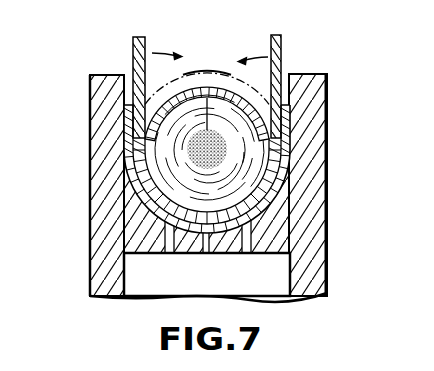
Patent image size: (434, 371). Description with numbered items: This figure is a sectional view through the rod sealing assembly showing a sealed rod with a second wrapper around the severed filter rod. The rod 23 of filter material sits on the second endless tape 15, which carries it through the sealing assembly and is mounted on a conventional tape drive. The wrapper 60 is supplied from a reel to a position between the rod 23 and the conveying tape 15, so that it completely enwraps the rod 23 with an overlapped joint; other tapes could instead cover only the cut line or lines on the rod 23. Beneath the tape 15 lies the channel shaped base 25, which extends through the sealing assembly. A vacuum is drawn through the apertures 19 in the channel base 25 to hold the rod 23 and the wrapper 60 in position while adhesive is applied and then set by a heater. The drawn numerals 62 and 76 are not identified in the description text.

The second endless tape 15 is at (285, 120).
The apertures 19 is at (245, 255).
The rod 23 is at (92, 147).
The channel shaped base 25 is at (98, 208).
The wrapper 60 is at (233, 79).
The right die block 62 is at (325, 185).
The insert bars 76 is at (145, 44).